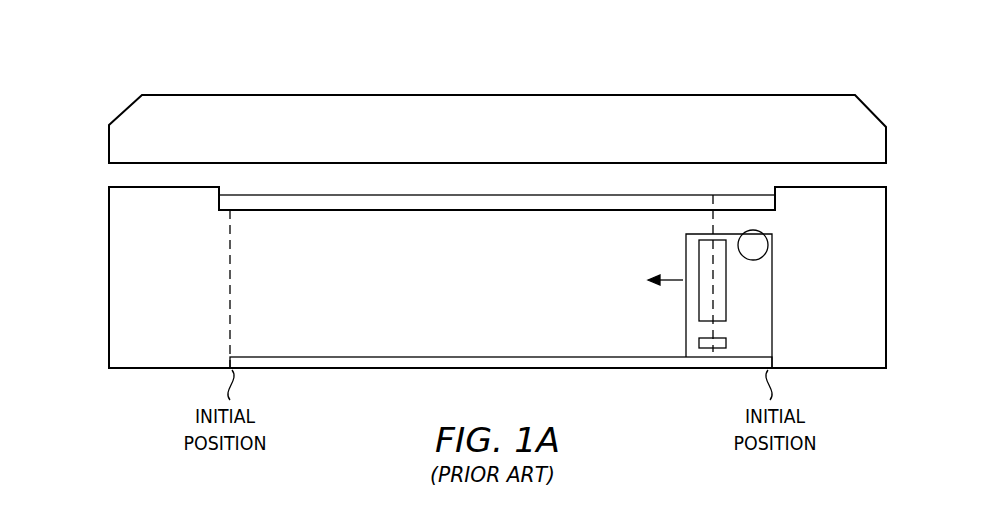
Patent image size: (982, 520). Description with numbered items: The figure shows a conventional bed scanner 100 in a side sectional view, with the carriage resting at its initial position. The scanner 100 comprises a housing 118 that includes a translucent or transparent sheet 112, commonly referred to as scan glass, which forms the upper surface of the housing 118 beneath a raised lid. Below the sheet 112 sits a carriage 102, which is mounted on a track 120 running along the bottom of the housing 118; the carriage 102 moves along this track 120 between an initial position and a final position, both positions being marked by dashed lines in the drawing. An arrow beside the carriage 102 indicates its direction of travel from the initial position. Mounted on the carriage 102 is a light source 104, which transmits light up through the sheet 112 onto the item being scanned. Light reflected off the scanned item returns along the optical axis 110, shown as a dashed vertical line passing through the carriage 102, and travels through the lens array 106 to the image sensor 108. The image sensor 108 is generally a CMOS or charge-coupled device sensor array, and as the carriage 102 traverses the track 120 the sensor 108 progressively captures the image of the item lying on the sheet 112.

The bed scanner 100 is at (630, 62).
The carriage 102 is at (762, 330).
The light source 104 is at (766, 243).
The lens array 106 is at (720, 283).
The image sensor 108 is at (700, 343).
The optical axis 110 is at (703, 257).
The translucent or transparent sheet 112 is at (310, 211).
The housing 118 is at (108, 306).
The track 120 is at (350, 369).